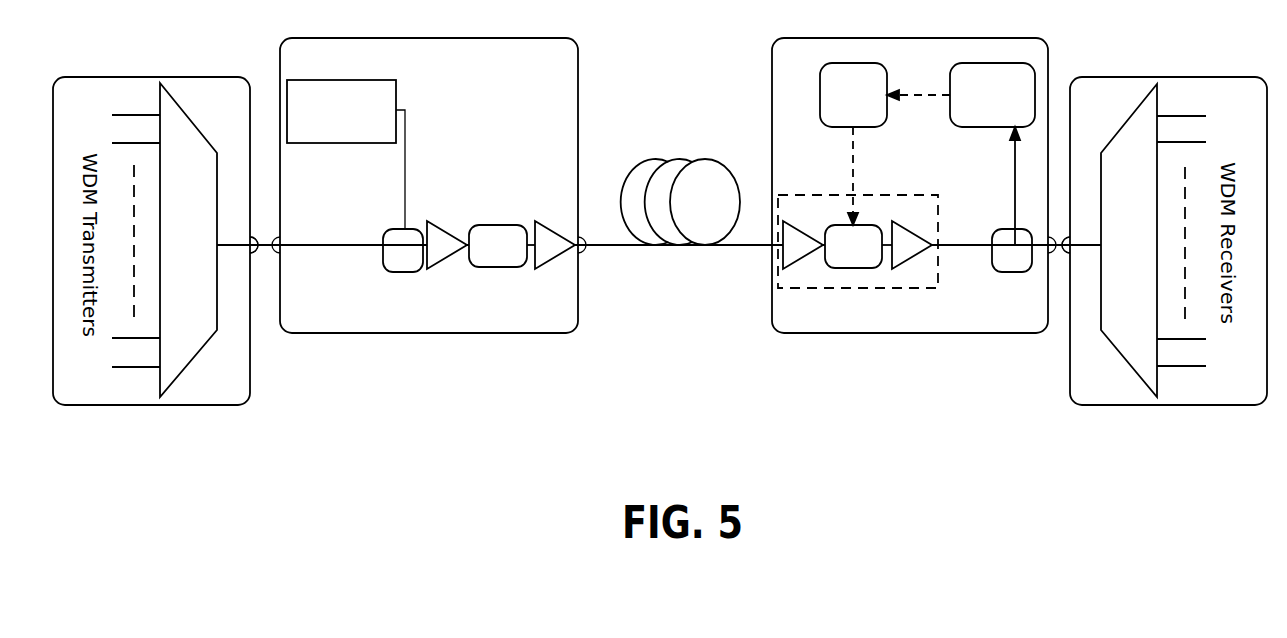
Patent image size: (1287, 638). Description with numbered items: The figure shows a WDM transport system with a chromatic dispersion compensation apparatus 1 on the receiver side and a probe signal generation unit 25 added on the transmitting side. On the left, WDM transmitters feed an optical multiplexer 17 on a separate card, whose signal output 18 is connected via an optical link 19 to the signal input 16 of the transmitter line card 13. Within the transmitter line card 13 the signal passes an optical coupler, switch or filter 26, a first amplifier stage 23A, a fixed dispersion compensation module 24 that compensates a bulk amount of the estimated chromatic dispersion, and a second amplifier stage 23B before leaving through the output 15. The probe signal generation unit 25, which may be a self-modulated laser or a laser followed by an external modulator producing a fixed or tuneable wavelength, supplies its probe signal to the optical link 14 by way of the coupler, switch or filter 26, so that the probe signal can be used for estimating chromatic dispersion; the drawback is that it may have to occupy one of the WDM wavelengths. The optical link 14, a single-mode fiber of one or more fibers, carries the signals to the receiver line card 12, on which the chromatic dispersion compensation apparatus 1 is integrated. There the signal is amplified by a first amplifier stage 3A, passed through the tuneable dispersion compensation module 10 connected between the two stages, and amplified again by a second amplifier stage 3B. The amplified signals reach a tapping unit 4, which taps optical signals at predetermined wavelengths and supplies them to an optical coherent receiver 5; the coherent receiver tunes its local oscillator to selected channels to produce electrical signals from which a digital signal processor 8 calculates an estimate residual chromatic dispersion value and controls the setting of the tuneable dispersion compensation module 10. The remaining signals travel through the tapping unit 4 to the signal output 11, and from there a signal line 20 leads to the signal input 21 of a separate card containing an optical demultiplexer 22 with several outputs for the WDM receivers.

The chromatic dispersion compensation apparatus 1 is at (858, 257).
The first amplifier stage 3A is at (795, 222).
The second amplifier stage 3B is at (917, 230).
The tapping unit 4 is at (1010, 262).
The optical coherent receiver 5 is at (992, 95).
The digital signal processor 8 is at (853, 95).
The tuneable dispersion compensation module 10 is at (868, 225).
The signal output 11 is at (1052, 253).
The receiver line card 12 is at (868, 335).
The transmitter line card 13 is at (445, 335).
The optical link 14 is at (688, 247).
The output 15 is at (586, 238).
The signal input 16 is at (277, 255).
The optical multiplexer 17 is at (180, 355).
The signal output 18 is at (258, 255).
The optical link 19 is at (262, 237).
The signal line 20 is at (1065, 250).
The signal input 21 is at (1077, 245).
The optical demultiplexer 22 is at (1137, 355).
The first amplifier stage 23A is at (440, 242).
The second amplifier stage 23B is at (548, 245).
The fixed dispersion compensation module 24 is at (497, 225).
The probe signal generation unit 25 is at (346, 155).
The optical coupler, switch or filter 26 is at (397, 260).